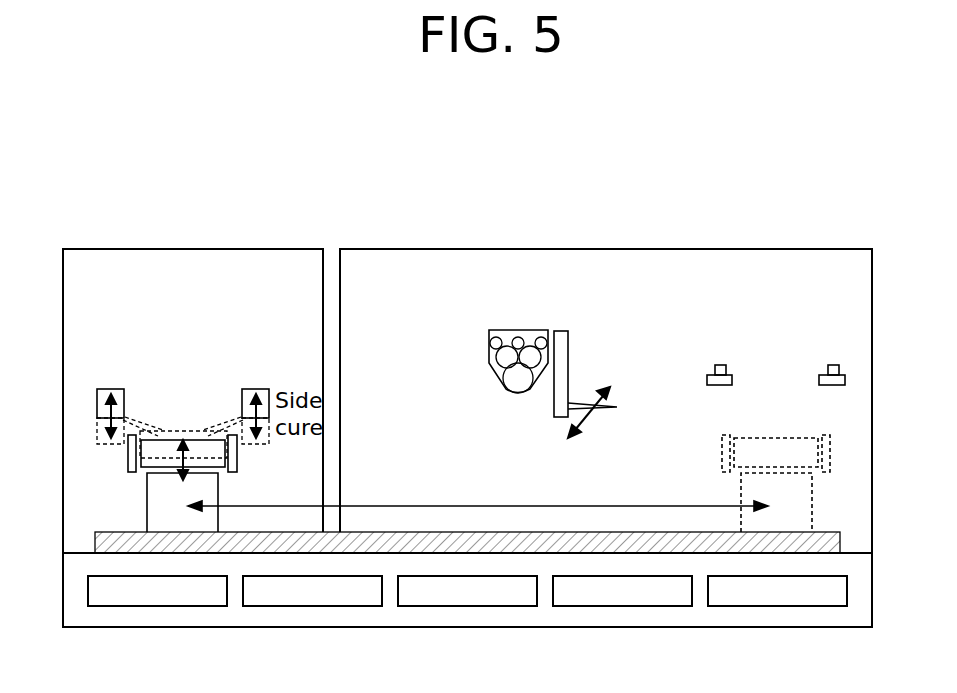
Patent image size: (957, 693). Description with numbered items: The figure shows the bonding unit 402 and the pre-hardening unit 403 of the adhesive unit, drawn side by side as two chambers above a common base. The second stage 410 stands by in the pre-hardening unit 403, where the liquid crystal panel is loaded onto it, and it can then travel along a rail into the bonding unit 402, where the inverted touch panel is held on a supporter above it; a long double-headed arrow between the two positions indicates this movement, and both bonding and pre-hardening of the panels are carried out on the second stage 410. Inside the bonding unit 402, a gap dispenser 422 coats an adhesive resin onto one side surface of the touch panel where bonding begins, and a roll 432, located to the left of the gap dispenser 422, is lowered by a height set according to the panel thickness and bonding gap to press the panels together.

The pre-hardening unit 403 is at (193, 381).
The bonding unit 402 is at (623, 231).
The second stage 410 is at (148, 501).
The gap dispenser 422 is at (562, 330).
The roll 432 is at (489, 352).